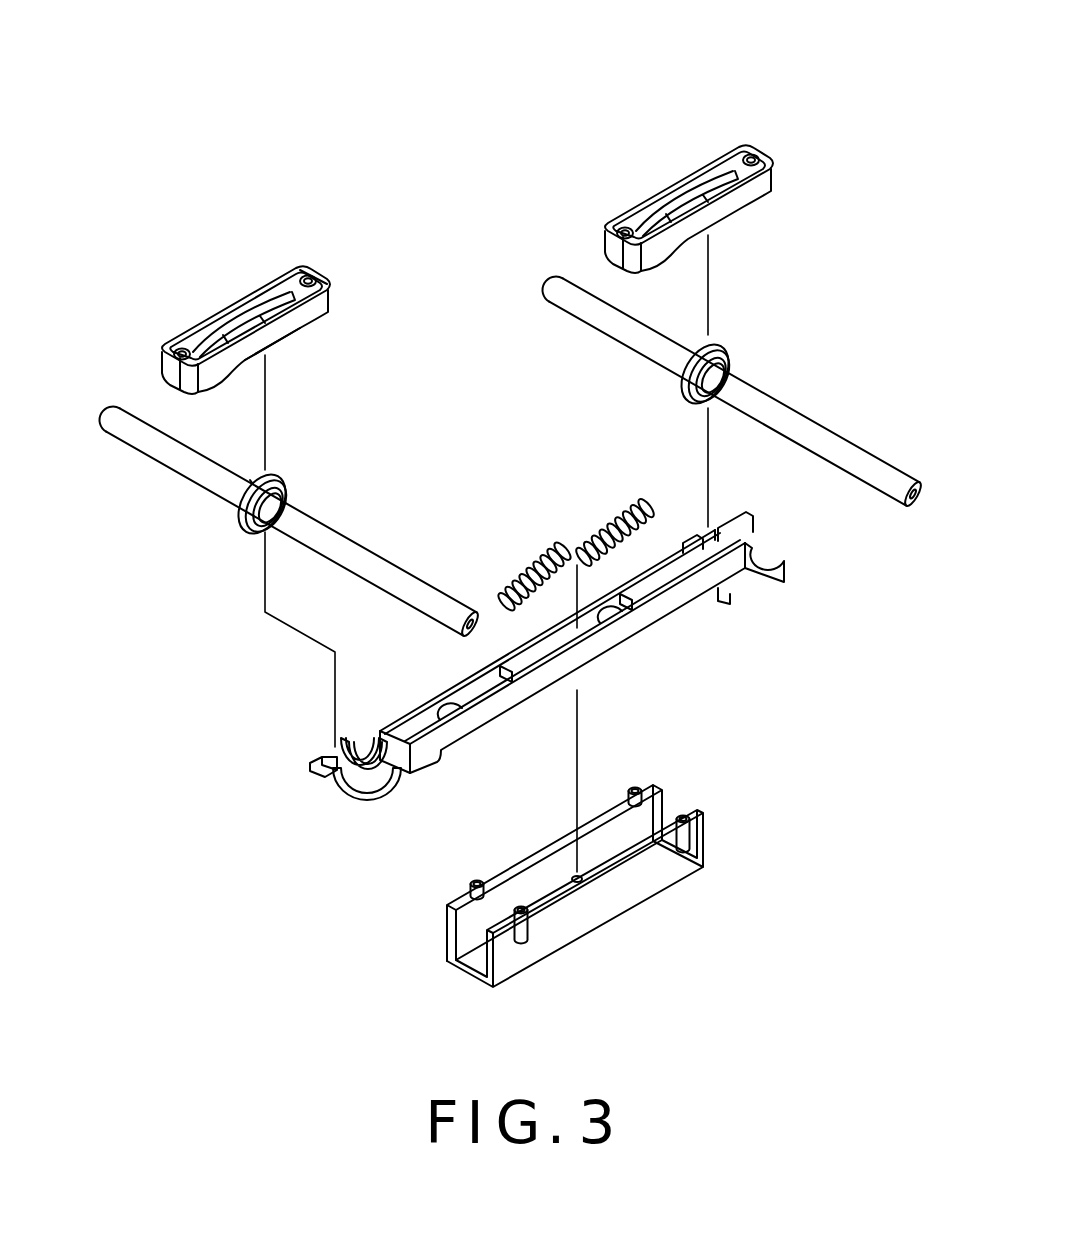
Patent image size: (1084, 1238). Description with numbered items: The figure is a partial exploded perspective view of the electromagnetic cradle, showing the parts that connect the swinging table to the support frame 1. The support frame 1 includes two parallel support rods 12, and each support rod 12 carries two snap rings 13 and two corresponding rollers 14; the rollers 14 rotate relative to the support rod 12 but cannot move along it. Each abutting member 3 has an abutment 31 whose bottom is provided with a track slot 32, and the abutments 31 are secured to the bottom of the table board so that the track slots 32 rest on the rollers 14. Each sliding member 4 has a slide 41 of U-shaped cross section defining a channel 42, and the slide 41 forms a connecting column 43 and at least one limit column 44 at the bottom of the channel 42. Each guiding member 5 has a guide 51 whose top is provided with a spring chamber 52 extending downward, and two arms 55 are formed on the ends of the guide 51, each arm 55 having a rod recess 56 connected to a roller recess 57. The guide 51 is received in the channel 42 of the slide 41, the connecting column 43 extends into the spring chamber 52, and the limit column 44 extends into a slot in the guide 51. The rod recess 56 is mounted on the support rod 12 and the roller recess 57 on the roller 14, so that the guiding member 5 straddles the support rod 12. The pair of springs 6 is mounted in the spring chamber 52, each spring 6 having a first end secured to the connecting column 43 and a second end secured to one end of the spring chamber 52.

The support frame 1 is at (496, 531).
The abutting member 3 is at (481, 208).
The abutment 31 is at (359, 297).
The track slot 32 is at (332, 358).
The support rod 12 is at (496, 457).
The snap ring 13 is at (456, 481).
The roller 14 is at (184, 535).
The spring 6 is at (576, 530).
The guiding member 5 is at (540, 689).
The guide 51 is at (767, 601).
The spring chamber 52 is at (589, 630).
The arm 55 is at (268, 784).
The rod recess 56 is at (327, 817).
The roller recess 57 is at (295, 735).
The sliding member 4 is at (590, 913).
The slide 41 is at (584, 898).
The channel 42 is at (616, 873).
The connecting column 43 is at (616, 943).
The limit column 44 is at (522, 900).